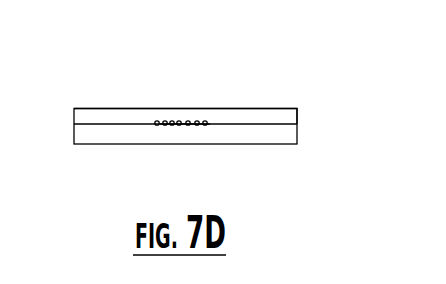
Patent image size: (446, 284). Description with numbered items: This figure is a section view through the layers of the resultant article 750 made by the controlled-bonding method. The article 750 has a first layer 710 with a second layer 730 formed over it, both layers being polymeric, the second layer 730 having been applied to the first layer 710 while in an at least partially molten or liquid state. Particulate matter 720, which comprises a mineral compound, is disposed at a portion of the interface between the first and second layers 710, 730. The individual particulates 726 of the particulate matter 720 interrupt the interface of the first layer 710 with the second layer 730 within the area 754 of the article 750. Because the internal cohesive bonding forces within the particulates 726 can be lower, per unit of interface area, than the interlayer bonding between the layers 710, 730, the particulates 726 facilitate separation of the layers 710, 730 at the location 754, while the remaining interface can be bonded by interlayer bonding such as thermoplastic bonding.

The article 750 is at (100, 98).
The first layer 710 is at (108, 135).
The particulate matter 720 is at (219, 111).
The second layer 730 is at (280, 113).
The individual particulates 726 is at (173, 125).
The area 754 is at (210, 102).